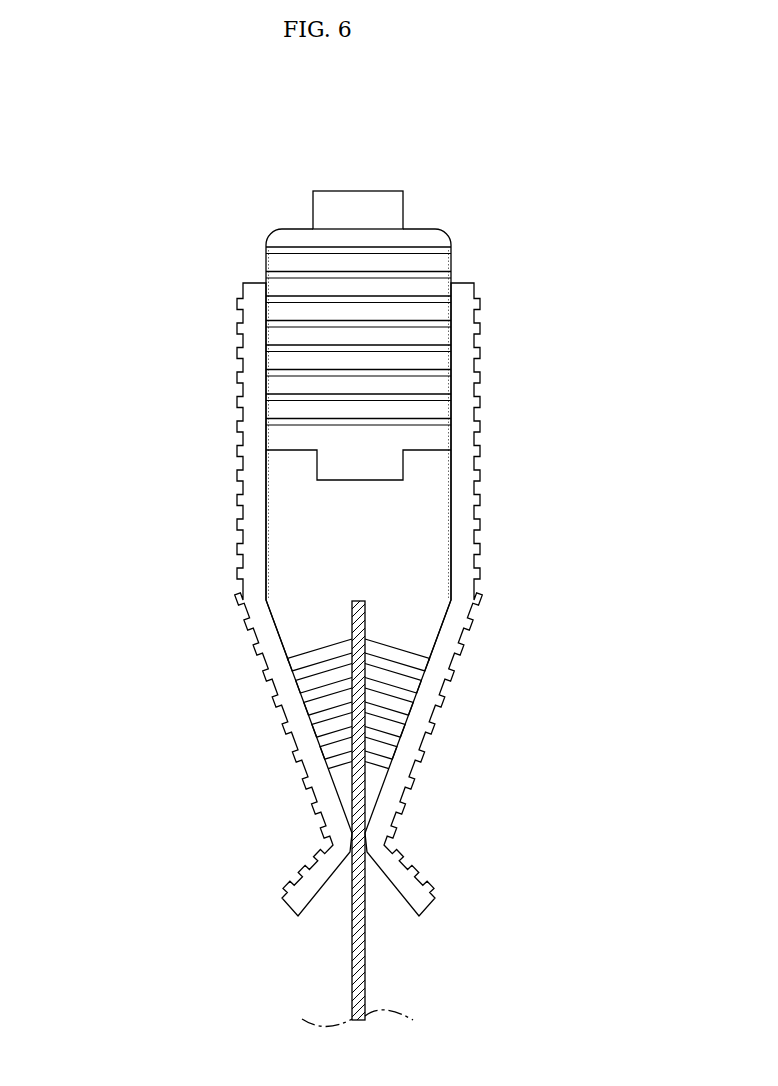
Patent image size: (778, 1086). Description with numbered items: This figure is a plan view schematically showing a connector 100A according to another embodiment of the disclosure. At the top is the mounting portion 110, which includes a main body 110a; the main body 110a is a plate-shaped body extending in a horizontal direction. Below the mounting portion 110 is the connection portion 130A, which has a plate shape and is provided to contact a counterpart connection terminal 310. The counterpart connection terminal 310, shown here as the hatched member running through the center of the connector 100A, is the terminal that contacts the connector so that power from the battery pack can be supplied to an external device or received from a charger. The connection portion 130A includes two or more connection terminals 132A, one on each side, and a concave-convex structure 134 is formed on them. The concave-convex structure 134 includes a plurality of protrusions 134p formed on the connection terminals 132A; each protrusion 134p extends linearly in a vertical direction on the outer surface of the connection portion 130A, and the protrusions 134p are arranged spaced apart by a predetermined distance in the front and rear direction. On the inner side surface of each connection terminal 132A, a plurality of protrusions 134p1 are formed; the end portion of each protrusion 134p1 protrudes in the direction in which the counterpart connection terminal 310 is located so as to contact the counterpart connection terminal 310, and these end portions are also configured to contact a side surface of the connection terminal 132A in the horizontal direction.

The connector 100A is at (153, 112).
The mounting portion 110 is at (341, 180).
The main body 110a is at (300, 258).
The protrusions 134p is at (478, 298).
The connection portion 130A is at (135, 345).
The connection terminal 132A is at (247, 343).
The concave-convex structure 134 is at (153, 638).
The protrusions on inner side surface 134p1 is at (323, 643).
The counterpart connection terminal 310 is at (363, 952).